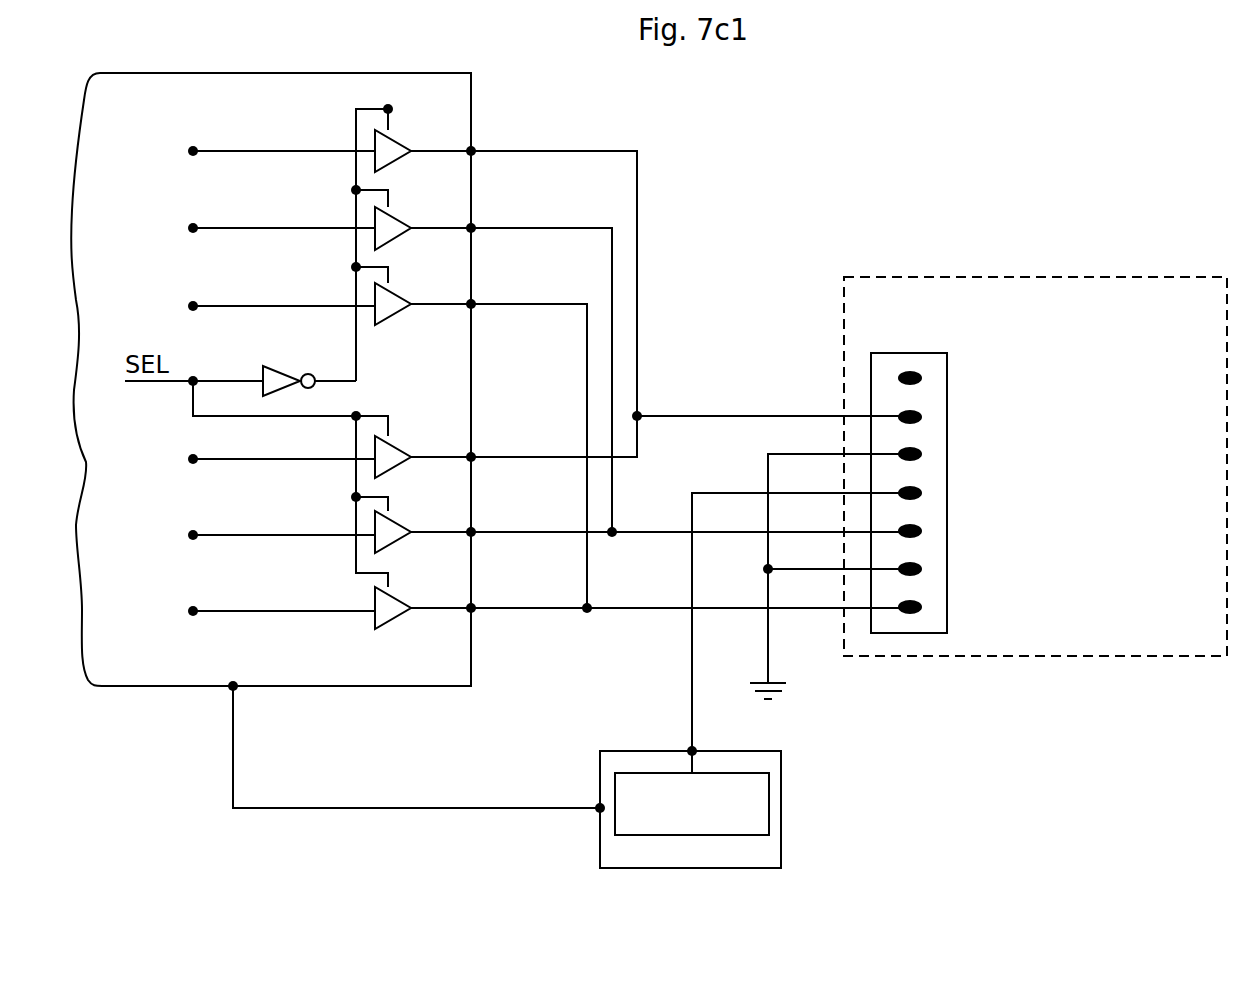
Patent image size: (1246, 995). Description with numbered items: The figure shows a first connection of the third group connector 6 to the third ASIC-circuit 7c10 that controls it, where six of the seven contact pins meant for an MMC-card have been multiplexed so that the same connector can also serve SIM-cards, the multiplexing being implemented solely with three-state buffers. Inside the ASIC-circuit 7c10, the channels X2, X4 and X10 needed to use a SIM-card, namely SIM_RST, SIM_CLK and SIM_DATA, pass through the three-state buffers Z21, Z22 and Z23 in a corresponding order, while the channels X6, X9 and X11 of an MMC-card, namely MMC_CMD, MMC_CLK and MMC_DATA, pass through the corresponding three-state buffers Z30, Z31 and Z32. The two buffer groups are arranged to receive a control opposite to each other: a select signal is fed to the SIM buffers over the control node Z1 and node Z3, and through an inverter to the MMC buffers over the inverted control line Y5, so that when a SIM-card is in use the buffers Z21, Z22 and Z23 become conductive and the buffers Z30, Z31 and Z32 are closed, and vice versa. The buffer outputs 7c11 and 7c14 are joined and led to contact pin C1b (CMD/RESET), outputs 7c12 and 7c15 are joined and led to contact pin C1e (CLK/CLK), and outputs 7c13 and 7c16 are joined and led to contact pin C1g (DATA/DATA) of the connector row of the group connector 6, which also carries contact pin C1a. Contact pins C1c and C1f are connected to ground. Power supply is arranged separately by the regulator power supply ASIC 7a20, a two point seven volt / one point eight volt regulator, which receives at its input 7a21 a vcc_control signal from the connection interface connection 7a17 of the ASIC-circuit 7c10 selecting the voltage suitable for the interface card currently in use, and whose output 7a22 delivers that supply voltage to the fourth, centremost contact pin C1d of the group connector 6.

The third ASIC-circuit 7c10 is at (471, 92).
The output 7c11 is at (473, 150).
The output 7c12 is at (473, 227).
The output 7c13 is at (473, 303).
The output 7c14 is at (473, 456).
The output 7c15 is at (473, 531).
The MMC_DATA output node 7c16 is at (473, 607).
The SEL control node for SIM buffers Z1 is at (386, 108).
The control node Z3 is at (354, 189).
The 3-state buffer Z21 is at (400, 140).
The 3-state buffer Z22 is at (400, 217).
The 3-state buffer Z23 is at (400, 293).
The 3-state buffer Z30 is at (400, 447).
The 3-state buffer Z31 is at (400, 522).
The 3-state buffer Z32 is at (400, 598).
The channel X2 is at (190, 152).
The channel X4 is at (190, 229).
The channel X10 is at (190, 307).
The channel X6 is at (190, 460).
The channel X9 is at (190, 536).
The channel X11 is at (190, 612).
The inverted SEL control line Y5 is at (190, 392).
The third group connector 6 is at (994, 443).
The contact pin C1a is at (951, 380).
The contact pin C1b is at (1035, 419).
The contact pin C1c is at (984, 456).
The contact pin C1d is at (1021, 495).
The contact pin C1e is at (1014, 533).
The contact pin C1f is at (984, 571).
The contact pin C1g is at (1030, 609).
The connection interface connection 7a17 is at (236, 688).
The power supply ASIC 7a20 is at (755, 680).
The input 7a21 is at (598, 806).
The output 7a22 is at (690, 750).